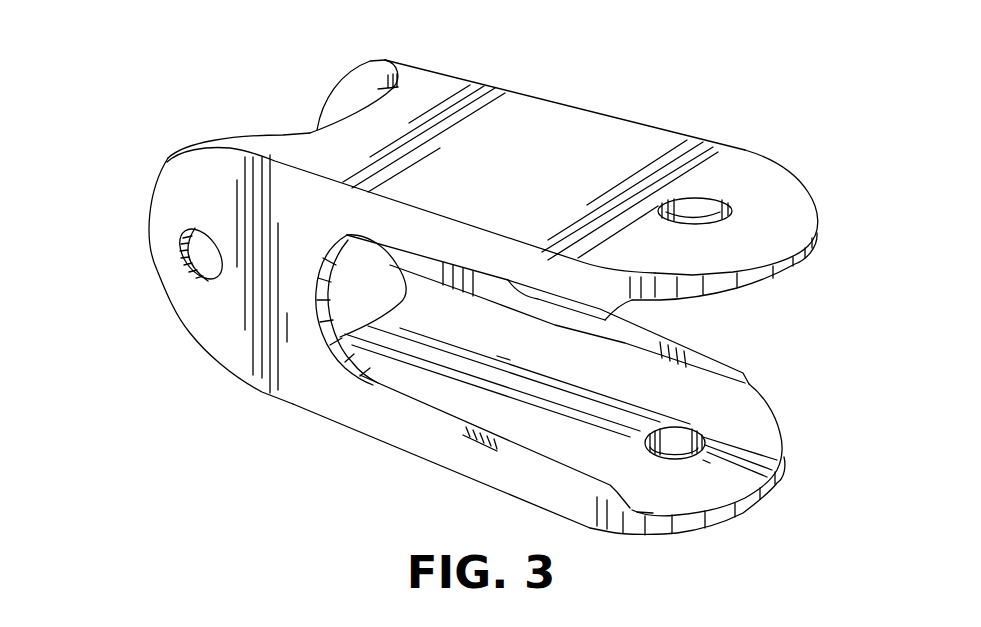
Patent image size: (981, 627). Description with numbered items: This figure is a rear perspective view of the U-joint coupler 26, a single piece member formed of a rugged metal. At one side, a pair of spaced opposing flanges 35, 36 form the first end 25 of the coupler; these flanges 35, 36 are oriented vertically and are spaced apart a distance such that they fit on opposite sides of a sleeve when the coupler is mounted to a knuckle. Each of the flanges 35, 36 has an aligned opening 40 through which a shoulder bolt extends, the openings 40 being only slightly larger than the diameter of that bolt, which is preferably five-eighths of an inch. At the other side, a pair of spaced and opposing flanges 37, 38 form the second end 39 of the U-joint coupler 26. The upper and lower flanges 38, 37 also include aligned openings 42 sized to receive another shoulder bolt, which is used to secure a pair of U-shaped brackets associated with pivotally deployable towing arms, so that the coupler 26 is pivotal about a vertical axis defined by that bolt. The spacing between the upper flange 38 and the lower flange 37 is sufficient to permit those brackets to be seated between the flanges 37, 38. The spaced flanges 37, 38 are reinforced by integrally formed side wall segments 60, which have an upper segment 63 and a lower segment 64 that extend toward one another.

The first end 25 is at (168, 160).
The U-joint coupler 26 is at (344, 437).
The flange 35 is at (178, 308).
The flange 36 is at (347, 89).
The flange 37 is at (717, 497).
The flange 38 is at (785, 258).
The second end 39 is at (809, 441).
The openings 40 is at (180, 260).
The openings 42 is at (703, 213).
The side wall segments 60 is at (327, 338).
The upper segment 63 is at (530, 288).
The lower segment 64 is at (673, 344).